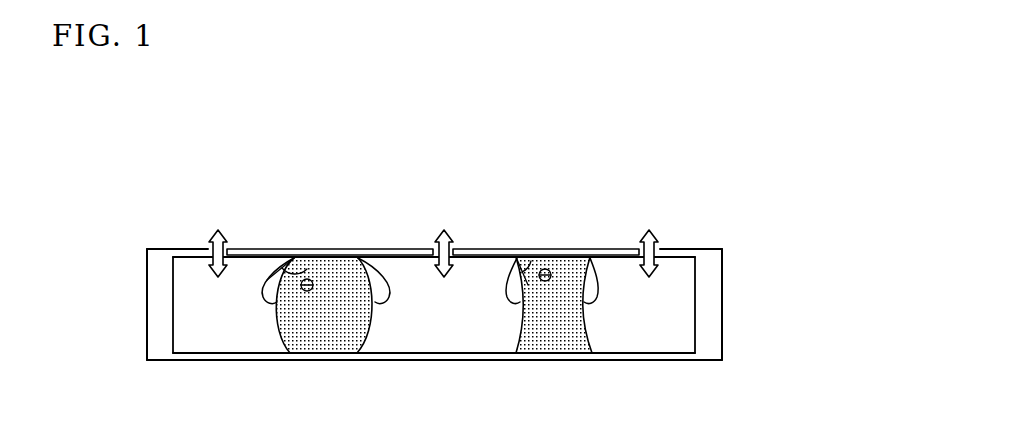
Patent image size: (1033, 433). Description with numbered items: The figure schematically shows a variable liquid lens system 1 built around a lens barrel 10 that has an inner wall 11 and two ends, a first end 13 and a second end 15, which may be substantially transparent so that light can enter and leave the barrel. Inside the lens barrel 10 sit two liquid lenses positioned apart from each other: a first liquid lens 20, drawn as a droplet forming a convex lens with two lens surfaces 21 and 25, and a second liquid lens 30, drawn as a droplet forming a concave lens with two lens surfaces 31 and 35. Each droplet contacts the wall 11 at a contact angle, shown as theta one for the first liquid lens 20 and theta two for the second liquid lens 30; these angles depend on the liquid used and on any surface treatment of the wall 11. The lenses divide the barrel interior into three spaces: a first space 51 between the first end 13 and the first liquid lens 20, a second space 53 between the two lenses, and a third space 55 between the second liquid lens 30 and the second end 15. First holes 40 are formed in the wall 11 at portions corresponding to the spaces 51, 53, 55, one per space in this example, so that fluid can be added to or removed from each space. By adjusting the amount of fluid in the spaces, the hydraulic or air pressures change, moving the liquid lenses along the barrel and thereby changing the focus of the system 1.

The variable liquid lens system 1 is at (748, 147).
The lens barrel 10 is at (731, 243).
The wall 11 is at (396, 264).
The first end 13 is at (155, 307).
The second end 15 is at (717, 307).
The first liquid lens 20 is at (327, 263).
The lens surface 21 is at (272, 277).
The lens surface 25 is at (381, 277).
The second liquid lens 30 is at (565, 263).
The lens surface 31 is at (508, 268).
The lens surface 35 is at (597, 277).
The first holes 40 is at (229, 251).
The first space 51 is at (214, 316).
The second space 53 is at (433, 316).
The third space 55 is at (639, 314).